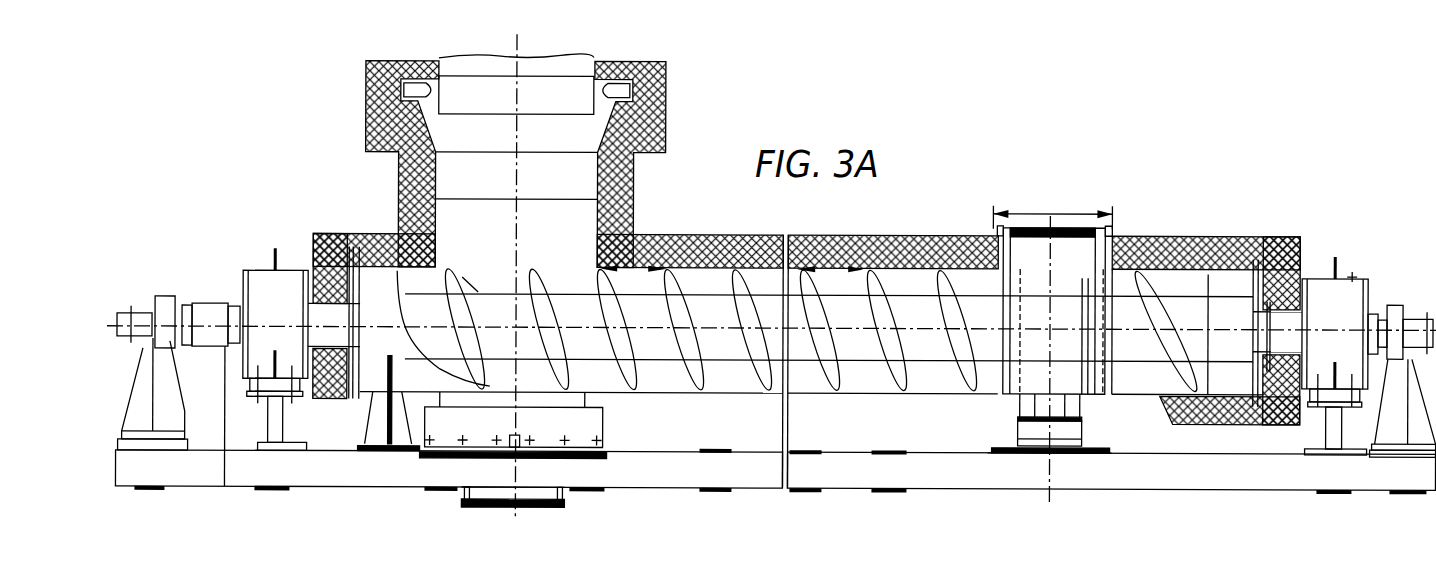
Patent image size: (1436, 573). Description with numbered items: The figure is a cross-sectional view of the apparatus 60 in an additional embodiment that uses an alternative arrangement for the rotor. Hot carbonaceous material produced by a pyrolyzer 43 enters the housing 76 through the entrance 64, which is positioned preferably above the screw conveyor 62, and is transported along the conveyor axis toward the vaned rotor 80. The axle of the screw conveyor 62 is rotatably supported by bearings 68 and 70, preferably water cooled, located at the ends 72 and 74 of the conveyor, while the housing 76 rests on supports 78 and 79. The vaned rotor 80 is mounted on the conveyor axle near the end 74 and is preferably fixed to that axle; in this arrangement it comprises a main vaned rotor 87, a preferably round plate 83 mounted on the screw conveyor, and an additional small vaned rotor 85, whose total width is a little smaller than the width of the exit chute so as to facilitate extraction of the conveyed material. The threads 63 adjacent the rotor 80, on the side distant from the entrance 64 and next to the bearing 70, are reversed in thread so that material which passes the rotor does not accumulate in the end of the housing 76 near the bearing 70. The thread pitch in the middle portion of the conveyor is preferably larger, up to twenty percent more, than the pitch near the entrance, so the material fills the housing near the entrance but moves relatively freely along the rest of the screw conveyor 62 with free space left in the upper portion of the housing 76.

The pyrolyzer 43 is at (590, 78).
The apparatus 60 is at (1050, 176).
The screw conveyor 62 is at (908, 234).
The threads 63 is at (1133, 268).
The entrance 64 is at (638, 150).
The bearing 68 is at (290, 272).
The bearing 70 is at (1340, 270).
The end 72 is at (373, 393).
The end 74 is at (1175, 395).
The housing 76 is at (883, 362).
The support 78 is at (583, 440).
The support 79 is at (1017, 420).
The vaned rotor 80 is at (1060, 447).
The round plate 83 is at (1075, 440).
The small vaned rotor 85 is at (1090, 450).
The main vaned rotor 87 is at (1060, 425).